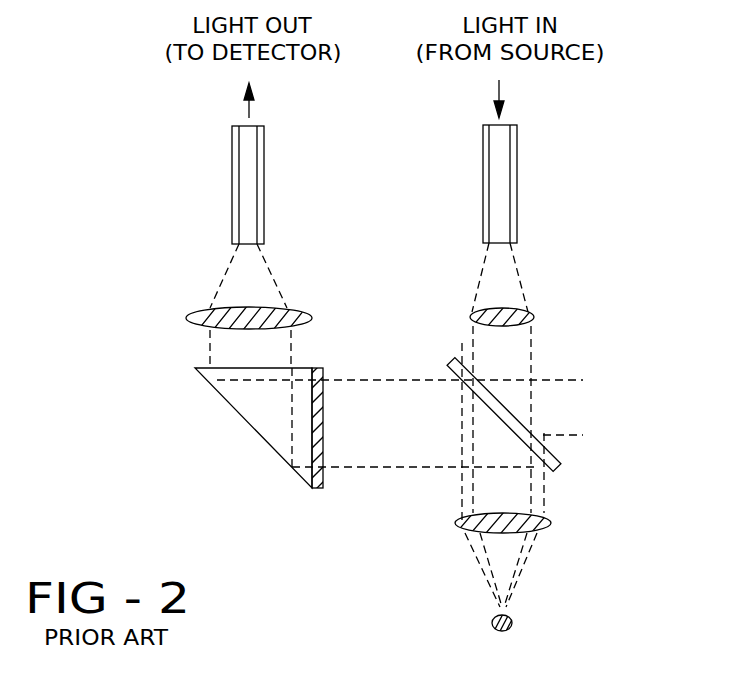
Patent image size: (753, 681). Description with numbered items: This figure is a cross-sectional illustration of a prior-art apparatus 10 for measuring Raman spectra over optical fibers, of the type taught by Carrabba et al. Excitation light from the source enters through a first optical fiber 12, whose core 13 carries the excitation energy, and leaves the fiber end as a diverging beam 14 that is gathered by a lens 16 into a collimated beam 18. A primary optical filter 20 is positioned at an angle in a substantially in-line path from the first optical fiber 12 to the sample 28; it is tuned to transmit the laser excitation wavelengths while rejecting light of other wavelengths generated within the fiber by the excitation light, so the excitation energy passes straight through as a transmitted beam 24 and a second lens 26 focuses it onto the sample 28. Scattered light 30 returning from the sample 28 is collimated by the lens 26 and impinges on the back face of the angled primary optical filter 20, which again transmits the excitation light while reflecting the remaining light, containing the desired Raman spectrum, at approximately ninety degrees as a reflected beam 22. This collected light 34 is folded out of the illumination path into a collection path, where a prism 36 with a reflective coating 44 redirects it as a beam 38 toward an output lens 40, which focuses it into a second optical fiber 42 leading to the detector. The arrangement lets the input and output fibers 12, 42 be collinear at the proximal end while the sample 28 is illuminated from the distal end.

The prior art optical system 10 is at (636, 204).
The first optical fiber 12 is at (503, 138).
The fiber core 13 is at (512, 165).
The diverging light beam 14 is at (516, 266).
The collimating lens 16 is at (518, 312).
The collimated light beam 18 is at (530, 342).
The primary optical filter 20 is at (507, 412).
The reflected beam 22 is at (515, 380).
The transmitted beam 24 is at (544, 489).
The focusing lens 26 is at (551, 523).
The sample 28 is at (495, 635).
The returned light rays 30 is at (460, 437).
The beam toward prism 34 is at (406, 468).
The prism 36 is at (258, 418).
The beam to output lens 38 is at (210, 347).
The output focusing lens 40 is at (218, 305).
The output optical fiber 42 is at (245, 199).
The reflective coating 44 is at (318, 462).